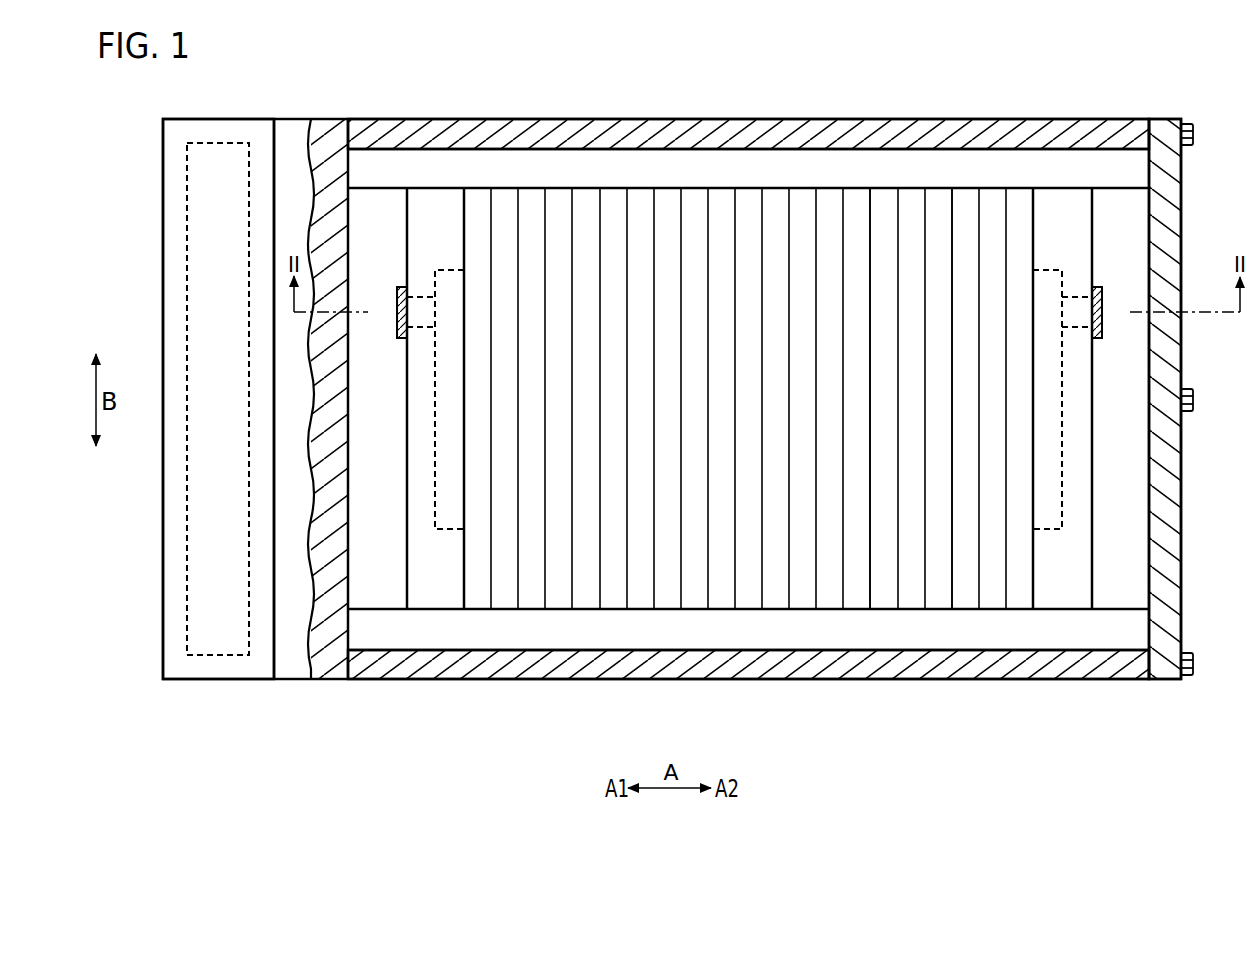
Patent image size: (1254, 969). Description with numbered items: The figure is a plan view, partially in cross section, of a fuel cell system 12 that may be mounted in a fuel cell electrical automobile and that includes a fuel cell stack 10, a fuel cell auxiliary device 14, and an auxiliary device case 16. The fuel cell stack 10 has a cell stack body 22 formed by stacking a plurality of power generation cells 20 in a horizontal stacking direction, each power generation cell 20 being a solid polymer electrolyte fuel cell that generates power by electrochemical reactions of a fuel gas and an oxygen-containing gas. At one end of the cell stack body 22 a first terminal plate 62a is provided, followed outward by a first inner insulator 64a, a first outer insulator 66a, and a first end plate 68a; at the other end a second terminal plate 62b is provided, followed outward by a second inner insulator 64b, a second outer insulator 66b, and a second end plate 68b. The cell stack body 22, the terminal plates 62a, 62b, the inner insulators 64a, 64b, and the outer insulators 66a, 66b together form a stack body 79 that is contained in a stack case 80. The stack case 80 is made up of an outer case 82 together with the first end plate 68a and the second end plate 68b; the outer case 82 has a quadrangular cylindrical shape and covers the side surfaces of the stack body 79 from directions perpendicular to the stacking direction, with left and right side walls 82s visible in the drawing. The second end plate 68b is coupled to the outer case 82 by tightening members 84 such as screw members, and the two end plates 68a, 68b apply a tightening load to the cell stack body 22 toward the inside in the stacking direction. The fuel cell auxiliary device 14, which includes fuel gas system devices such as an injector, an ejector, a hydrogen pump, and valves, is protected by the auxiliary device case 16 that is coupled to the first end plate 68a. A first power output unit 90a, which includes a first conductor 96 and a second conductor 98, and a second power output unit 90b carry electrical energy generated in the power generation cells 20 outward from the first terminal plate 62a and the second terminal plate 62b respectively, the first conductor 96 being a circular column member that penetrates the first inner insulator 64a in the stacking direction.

The fuel cell stack 10 is at (1103, 77).
The fuel cell system 12 is at (284, 84).
The fuel cell auxiliary device 14 is at (237, 655).
The auxiliary device case 16 is at (207, 667).
The power generation cell 20 is at (778, 602).
The cell stack body 22 is at (884, 614).
The first terminal plate 62a is at (449, 277).
The second terminal plate 62b is at (1048, 278).
The first inner insulator 64a is at (436, 598).
The second inner insulator 64b is at (1063, 598).
The first outer insulator 66a is at (383, 598).
The second outer insulator 66b is at (1116, 598).
The first end plate 68a is at (332, 672).
The second end plate 68b is at (1166, 672).
The stack body 79 is at (972, 621).
The stack case 80 is at (1176, 115).
The outer case 82 is at (896, 112).
The side wall 82s is at (806, 125).
The tightening member 84 is at (1195, 133).
The first power output unit 90a is at (398, 272).
The second power output unit 90b is at (1108, 320).
The first conductor 96 is at (423, 328).
The second conductor 98 is at (397, 300).